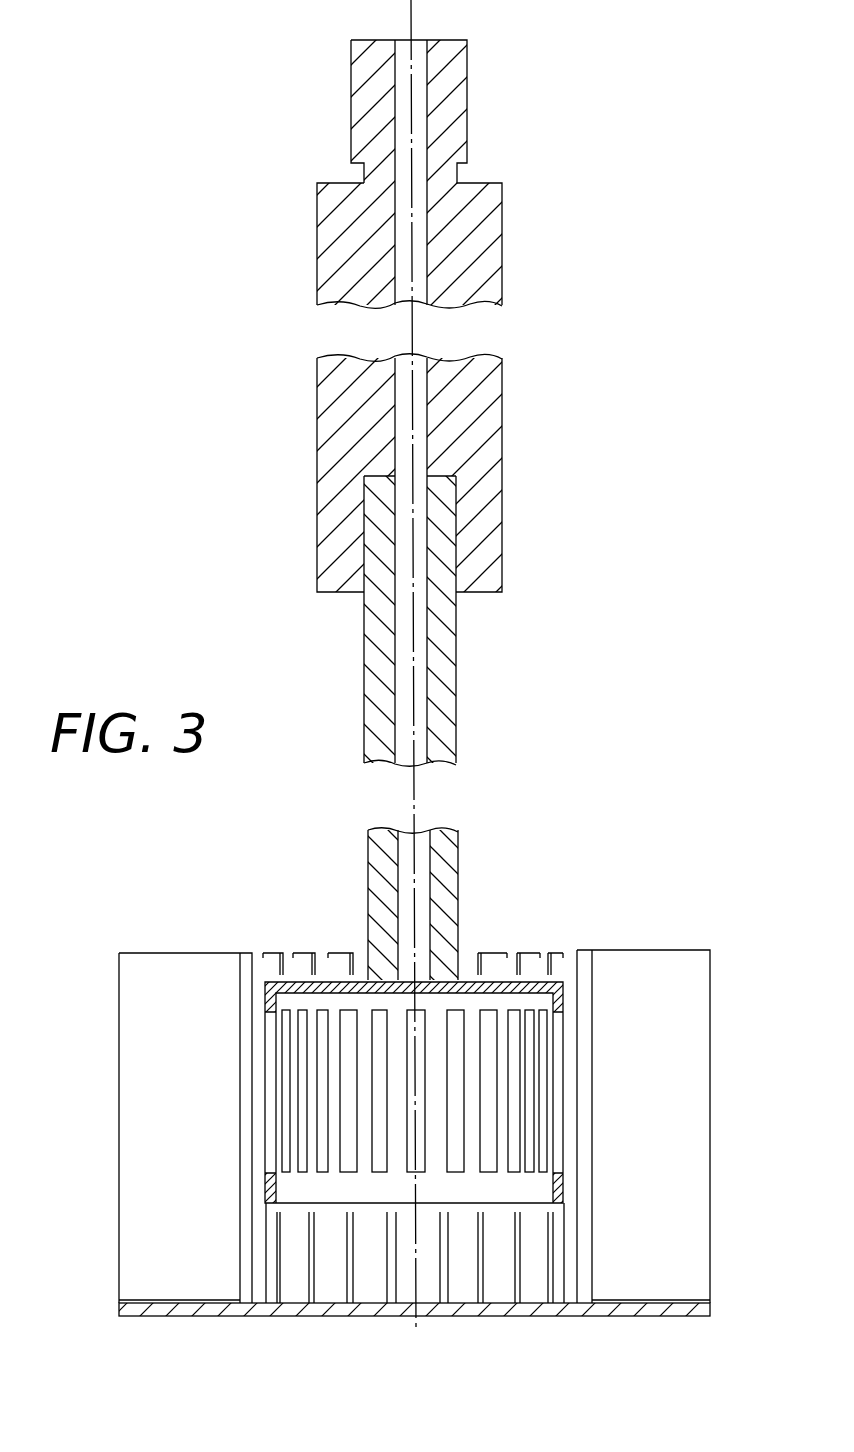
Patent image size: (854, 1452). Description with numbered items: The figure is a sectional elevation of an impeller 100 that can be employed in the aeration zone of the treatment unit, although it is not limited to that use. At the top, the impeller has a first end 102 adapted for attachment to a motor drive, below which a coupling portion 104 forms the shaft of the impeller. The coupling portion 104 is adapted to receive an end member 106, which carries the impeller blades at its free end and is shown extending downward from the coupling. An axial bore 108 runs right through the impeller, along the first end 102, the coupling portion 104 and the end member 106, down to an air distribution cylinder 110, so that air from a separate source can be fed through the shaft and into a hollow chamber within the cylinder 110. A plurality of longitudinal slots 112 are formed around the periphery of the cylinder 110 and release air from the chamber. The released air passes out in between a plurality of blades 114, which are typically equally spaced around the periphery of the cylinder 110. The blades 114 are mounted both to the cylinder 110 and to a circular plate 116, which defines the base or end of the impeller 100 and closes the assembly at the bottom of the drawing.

The impeller 100 is at (582, 388).
The first end 102 is at (467, 107).
The coupling portion 104 is at (487, 256).
The end member 106 is at (443, 679).
The axial bore 108 is at (413, 73).
The air distribution cylinder 110 is at (502, 990).
The longitudinal slots 112 is at (377, 1037).
The blades 114 is at (143, 985).
The circular plate 116 is at (621, 1310).